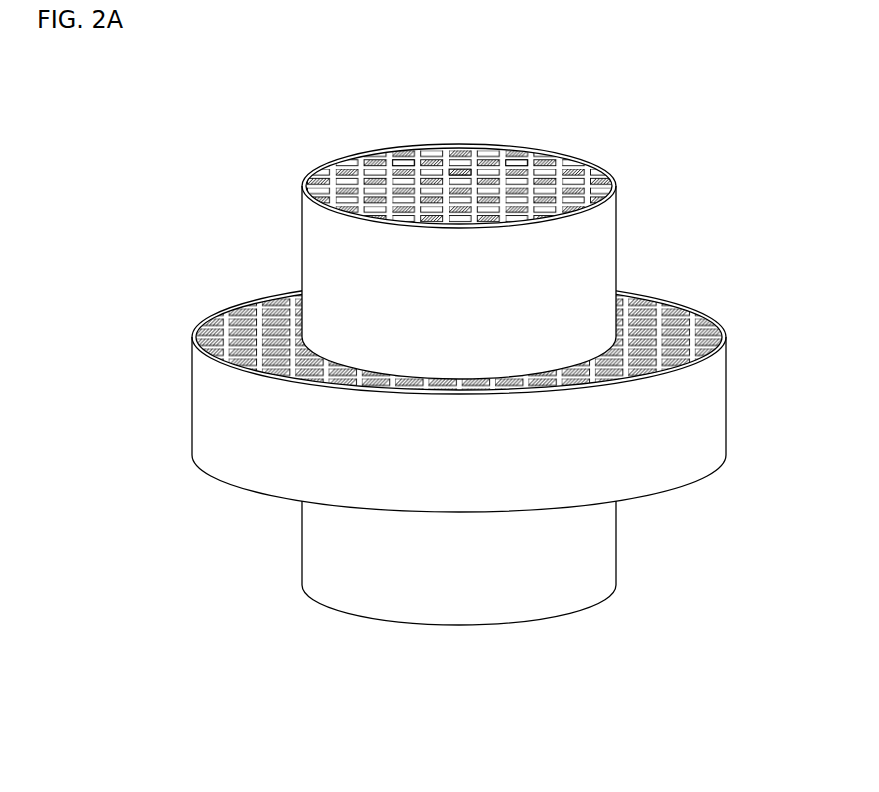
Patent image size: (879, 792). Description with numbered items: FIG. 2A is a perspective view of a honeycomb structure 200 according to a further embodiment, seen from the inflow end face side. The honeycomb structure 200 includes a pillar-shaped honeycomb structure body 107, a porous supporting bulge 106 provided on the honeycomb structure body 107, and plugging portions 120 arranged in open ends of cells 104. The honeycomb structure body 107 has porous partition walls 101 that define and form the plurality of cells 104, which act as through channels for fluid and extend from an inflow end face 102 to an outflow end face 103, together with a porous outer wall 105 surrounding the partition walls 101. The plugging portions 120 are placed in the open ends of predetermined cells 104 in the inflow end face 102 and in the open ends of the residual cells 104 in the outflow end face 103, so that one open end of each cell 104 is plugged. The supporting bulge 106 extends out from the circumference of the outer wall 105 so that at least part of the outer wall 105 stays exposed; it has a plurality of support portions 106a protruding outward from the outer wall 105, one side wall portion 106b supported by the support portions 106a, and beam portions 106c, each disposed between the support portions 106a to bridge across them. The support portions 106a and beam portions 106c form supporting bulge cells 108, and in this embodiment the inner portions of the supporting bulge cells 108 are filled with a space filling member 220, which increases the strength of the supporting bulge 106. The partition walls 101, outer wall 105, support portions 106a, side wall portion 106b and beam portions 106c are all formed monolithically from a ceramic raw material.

The honeycomb structure 200 is at (782, 73).
The partition walls 101 is at (447, 172).
The inflow end face 102 is at (347, 151).
The outflow end face 103 is at (345, 612).
The cells 104 is at (519, 162).
The outer wall 105 is at (567, 243).
The supporting bulge 106 is at (243, 413).
The support portions 106a is at (675, 308).
The side wall portion 106b is at (663, 425).
The beam portions 106c is at (693, 340).
The honeycomb structure body 107 is at (317, 247).
The supporting bulge cells 108 is at (228, 298).
The plugging portions 120 is at (408, 168).
The space filling member 220 is at (238, 330).